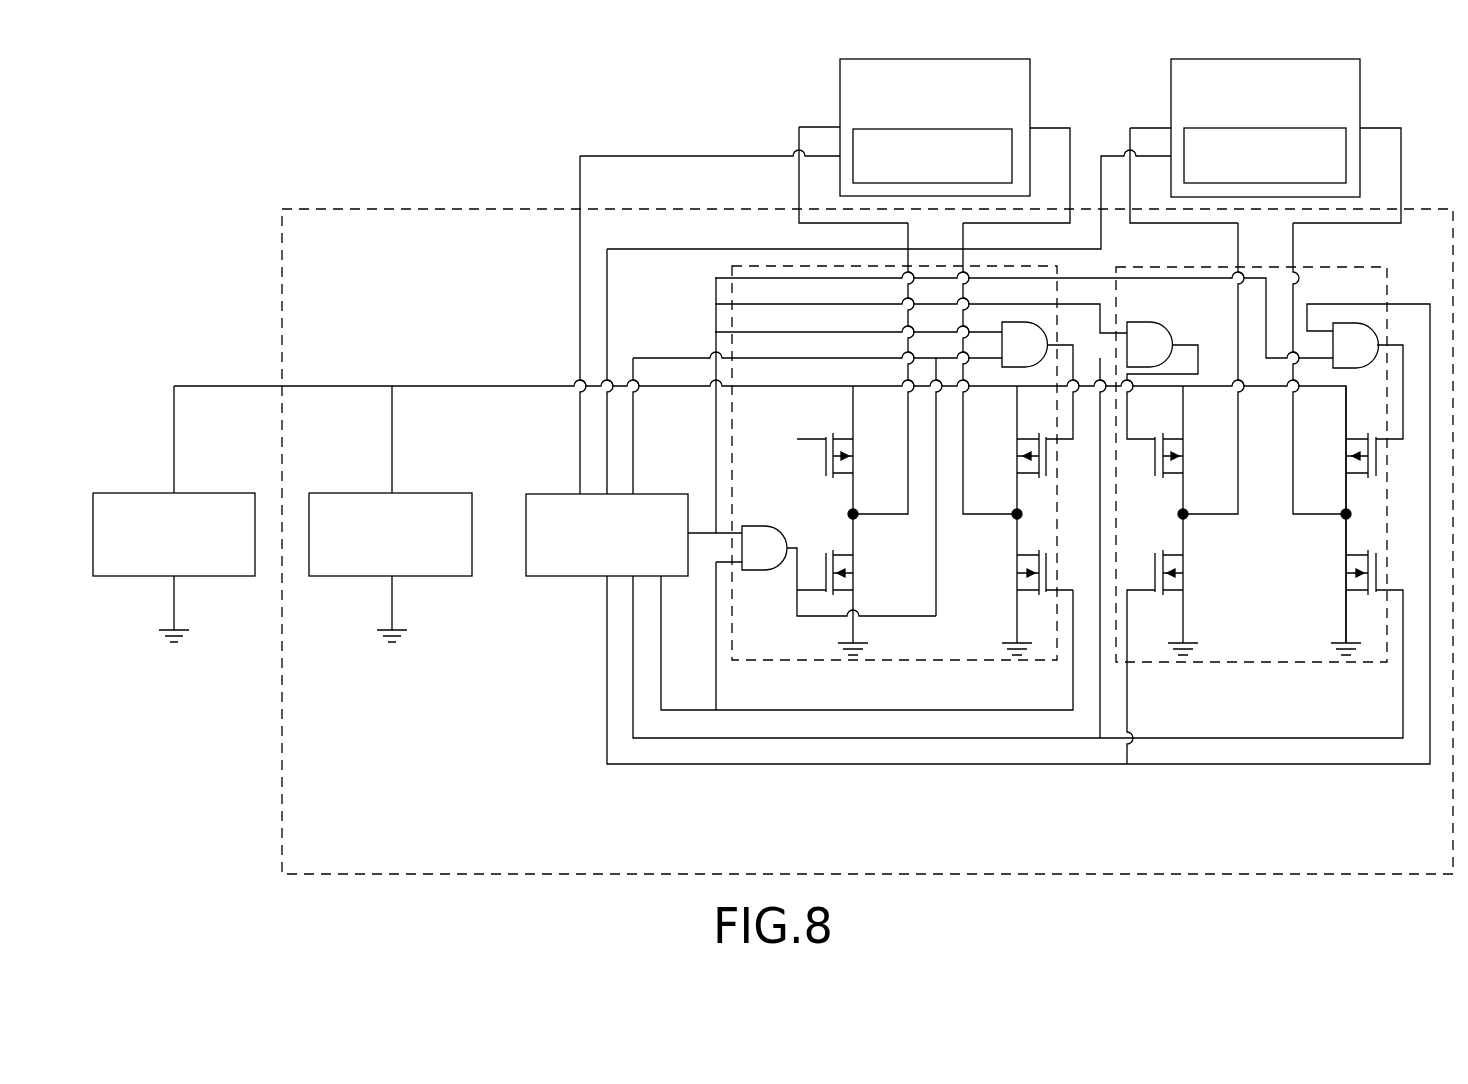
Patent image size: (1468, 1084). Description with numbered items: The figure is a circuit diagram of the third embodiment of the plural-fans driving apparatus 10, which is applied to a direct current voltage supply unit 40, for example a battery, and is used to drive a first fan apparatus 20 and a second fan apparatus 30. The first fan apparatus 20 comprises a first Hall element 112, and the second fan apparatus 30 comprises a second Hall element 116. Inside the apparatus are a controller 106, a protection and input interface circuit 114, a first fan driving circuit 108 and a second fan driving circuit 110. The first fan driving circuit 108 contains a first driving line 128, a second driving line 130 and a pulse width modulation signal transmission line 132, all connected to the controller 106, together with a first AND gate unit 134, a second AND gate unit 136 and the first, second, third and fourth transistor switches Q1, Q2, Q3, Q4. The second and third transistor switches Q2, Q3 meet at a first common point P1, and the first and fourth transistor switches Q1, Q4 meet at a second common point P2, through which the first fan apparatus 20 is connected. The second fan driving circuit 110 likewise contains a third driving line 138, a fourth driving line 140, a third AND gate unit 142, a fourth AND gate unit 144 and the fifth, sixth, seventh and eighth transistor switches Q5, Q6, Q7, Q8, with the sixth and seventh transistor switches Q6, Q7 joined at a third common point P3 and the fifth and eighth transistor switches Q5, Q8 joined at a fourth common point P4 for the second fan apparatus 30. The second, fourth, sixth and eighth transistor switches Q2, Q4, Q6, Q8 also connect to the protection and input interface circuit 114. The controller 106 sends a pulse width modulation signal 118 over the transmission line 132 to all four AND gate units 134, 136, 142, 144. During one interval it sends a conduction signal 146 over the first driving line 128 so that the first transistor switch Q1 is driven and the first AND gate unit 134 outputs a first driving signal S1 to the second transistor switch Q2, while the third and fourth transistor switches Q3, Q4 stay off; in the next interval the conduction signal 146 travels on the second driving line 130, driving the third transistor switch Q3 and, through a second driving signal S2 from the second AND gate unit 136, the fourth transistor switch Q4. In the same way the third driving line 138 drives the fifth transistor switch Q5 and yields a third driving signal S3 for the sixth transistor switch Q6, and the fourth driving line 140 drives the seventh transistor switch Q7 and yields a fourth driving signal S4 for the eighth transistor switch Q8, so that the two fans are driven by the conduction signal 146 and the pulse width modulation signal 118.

The plural-fans driving apparatus 10 is at (1032, 870).
The first fan apparatus 20 is at (1033, 94).
The second fan apparatus 30 is at (1363, 94).
The direct current voltage supply unit 40 is at (163, 497).
The controller 106 is at (548, 497).
The first fan driving circuit 108 is at (893, 657).
The second fan driving circuit 110 is at (1252, 657).
The first Hall element 112 is at (1010, 132).
The protection and input interface circuit 114 is at (380, 497).
The second Hall element 116 is at (1343, 132).
The pulse width modulation signal 118 is at (725, 278).
The first driving line 128 is at (702, 636).
The second driving line 130 is at (660, 366).
The pulse width modulation signal transmission line 132 is at (715, 547).
The first AND gate unit 134 is at (764, 548).
The second AND gate unit 136 is at (1025, 344).
The third driving line 138 is at (1018, 548).
The fourth driving line 140 is at (1018, 535).
The third AND gate unit 142 is at (1150, 344).
The fourth AND gate unit 144 is at (1356, 345).
The conduction signal 146 is at (663, 350).
The first driving signal S1 is at (861, 527).
The second driving signal S2 is at (1062, 347).
The third driving signal S3 is at (1187, 347).
The fourth driving signal S4 is at (1395, 347).
The first common point P1 is at (862, 520).
The second common point P2 is at (1008, 520).
The third common point P3 is at (1192, 520).
The fourth common point P4 is at (1337, 520).
The first transistor switch Q1 is at (1013, 572).
The second transistor switch Q2 is at (858, 455).
The third transistor switch Q3 is at (858, 572).
The fourth transistor switch Q4 is at (1013, 455).
The fifth transistor switch Q5 is at (1344, 572).
The sixth transistor switch Q6 is at (1186, 455).
The seventh transistor switch Q7 is at (1186, 572).
The eighth transistor switch Q8 is at (1344, 455).